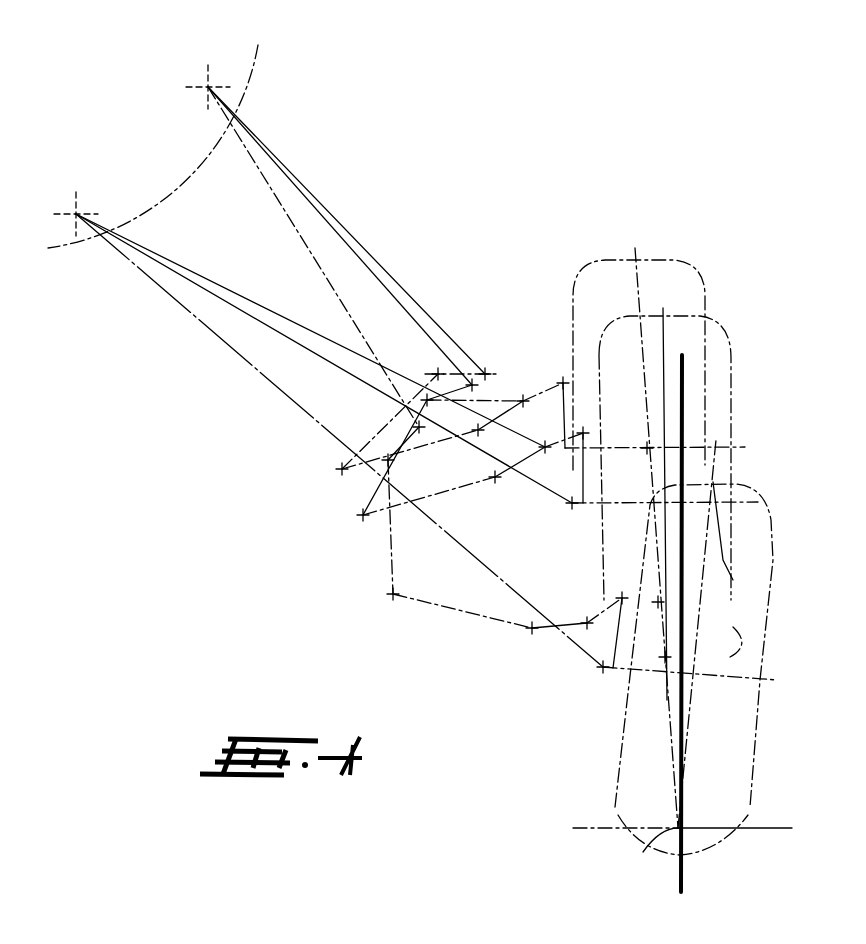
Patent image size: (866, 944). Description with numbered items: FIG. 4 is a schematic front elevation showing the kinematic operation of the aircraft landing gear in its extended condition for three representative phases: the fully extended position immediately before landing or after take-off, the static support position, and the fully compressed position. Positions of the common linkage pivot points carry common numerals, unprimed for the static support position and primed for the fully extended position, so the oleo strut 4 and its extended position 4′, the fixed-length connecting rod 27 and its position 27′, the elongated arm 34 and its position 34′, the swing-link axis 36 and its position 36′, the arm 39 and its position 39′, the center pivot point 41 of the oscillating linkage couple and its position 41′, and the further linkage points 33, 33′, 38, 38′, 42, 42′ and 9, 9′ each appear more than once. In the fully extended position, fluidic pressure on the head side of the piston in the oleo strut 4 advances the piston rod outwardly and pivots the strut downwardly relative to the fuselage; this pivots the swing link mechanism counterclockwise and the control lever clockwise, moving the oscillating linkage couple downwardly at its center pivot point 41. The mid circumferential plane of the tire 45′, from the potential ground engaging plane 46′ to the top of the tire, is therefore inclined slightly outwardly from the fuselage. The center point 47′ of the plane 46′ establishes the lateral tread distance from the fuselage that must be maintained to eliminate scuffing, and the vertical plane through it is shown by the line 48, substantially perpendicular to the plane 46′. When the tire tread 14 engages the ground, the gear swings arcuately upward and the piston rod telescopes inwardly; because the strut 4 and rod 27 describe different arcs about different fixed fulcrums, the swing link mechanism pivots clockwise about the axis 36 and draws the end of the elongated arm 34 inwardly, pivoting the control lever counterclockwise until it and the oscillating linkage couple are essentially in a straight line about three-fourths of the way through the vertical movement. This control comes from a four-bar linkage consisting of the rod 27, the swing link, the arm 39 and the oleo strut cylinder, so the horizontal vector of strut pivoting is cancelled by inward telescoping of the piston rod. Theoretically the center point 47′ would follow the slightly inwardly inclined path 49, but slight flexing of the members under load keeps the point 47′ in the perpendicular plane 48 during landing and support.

The oleo strut 4 is at (250, 316).
The oleo strut (fully extended position) 4′ is at (185, 307).
The wheel axle 9 is at (573, 506).
The wheel axle (second position) 9′ is at (600, 670).
The tire tread 14 is at (693, 858).
The connecting rod 27 is at (350, 250).
The connecting rod (fully extended position) 27′ is at (310, 256).
The pivot joint 33 is at (472, 388).
The pivot joint (second position) 33′ is at (419, 432).
The elongated arm 34 is at (358, 514).
The elongated arm (fully extended position) 34′ is at (390, 552).
The axis 36 is at (427, 396).
The axis (fully extended position) 36′ is at (388, 462).
The joint 38 is at (497, 480).
The joint (second position) 38′ is at (531, 631).
The arm 39 is at (448, 492).
The arm (fully extended position) 39′ is at (437, 606).
The center pivot point 41 is at (546, 446).
The center pivot point (fully extended position) 41′ is at (586, 621).
The link 42 is at (585, 432).
The link (second position) 42′ is at (621, 597).
The mid circumferential plane of the tire 45′ is at (690, 733).
The potential ground engaging plane 46′ is at (765, 832).
The center point of the ground engagement plane 47′ is at (643, 852).
The line 48 is at (684, 366).
The path 49 is at (642, 256).